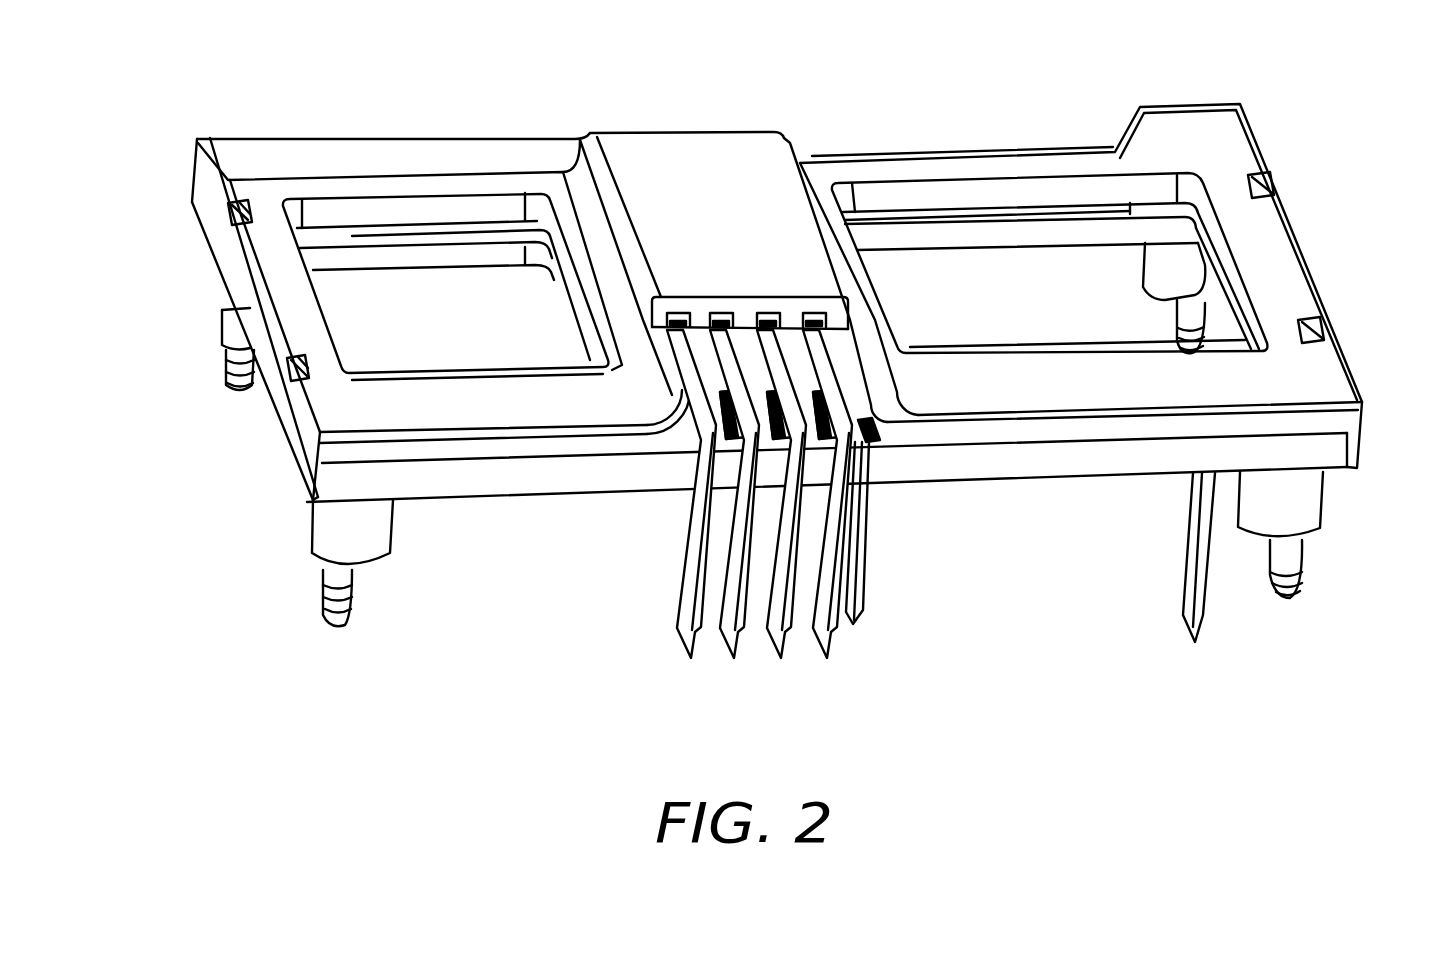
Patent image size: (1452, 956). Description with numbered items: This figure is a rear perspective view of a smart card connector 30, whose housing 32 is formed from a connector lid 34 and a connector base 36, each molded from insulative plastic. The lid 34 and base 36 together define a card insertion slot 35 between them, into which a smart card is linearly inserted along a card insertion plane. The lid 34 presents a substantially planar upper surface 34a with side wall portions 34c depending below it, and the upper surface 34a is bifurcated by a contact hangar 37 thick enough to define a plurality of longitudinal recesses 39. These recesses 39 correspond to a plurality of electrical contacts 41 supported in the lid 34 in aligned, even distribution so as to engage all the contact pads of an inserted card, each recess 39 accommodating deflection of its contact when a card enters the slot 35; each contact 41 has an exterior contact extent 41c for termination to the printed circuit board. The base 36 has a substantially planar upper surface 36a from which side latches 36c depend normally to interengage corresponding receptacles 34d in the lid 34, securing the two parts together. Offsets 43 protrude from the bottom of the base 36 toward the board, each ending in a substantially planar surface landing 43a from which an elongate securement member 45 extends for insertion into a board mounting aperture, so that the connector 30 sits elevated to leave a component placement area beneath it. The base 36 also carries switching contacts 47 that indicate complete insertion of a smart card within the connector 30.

The smart card connector 30 is at (780, 372).
The housing 32 is at (1212, 103).
The connector lid 34 is at (1270, 265).
The upper surface 34a is at (1287, 410).
The side wall portions 34c is at (222, 330).
The receptacles 34d is at (244, 207).
The card insertion slot 35 is at (912, 212).
The connector base 36 is at (1153, 457).
The upper surface 36a is at (333, 237).
The side latches 36c is at (217, 268).
The contact hangar 37 is at (712, 152).
The longitudinal recesses 39 is at (677, 330).
The electrical contacts 41 is at (761, 533).
The exterior contact extent 41c is at (697, 548).
The offsets 43 is at (760, 442).
The surface landing 43a is at (367, 575).
The securement member 45 is at (228, 388).
The switching contacts 47 is at (860, 582).